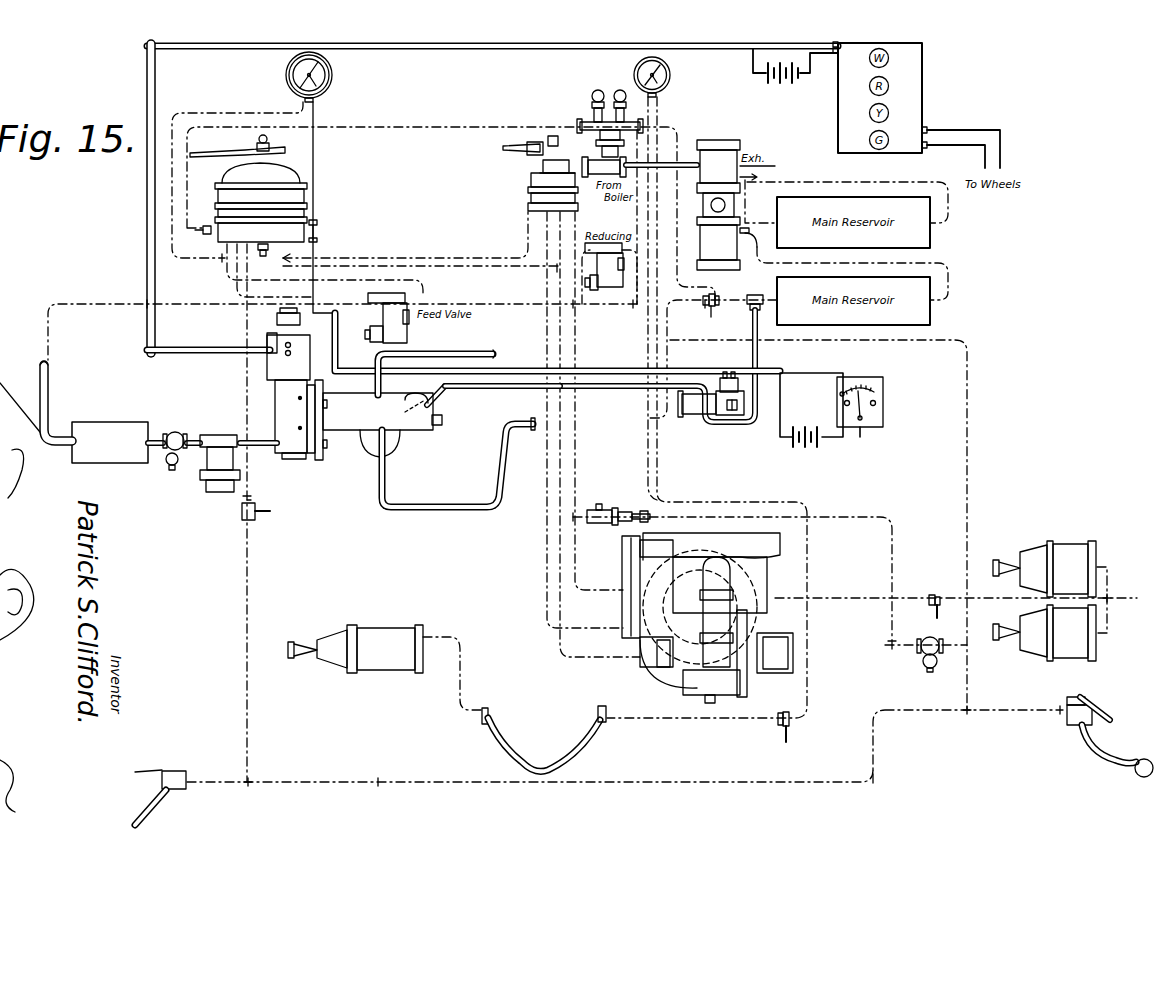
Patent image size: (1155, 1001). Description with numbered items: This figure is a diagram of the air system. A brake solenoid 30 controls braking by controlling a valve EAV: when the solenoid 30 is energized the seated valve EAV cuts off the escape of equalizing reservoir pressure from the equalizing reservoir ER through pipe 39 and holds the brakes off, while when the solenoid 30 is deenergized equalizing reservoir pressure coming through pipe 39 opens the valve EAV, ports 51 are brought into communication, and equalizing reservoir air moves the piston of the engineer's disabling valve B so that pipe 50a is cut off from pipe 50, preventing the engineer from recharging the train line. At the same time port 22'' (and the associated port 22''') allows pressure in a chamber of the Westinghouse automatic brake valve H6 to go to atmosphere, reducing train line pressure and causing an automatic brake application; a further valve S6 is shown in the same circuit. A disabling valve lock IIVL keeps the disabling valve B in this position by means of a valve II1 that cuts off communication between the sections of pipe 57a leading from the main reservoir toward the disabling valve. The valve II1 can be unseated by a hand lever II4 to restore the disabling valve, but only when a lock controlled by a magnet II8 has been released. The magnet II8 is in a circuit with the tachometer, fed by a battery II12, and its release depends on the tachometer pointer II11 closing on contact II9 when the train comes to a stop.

The Westinghouse automatic brake valve H6 is at (283, 198).
The valve S6 is at (540, 173).
The brake solenoid 30 is at (263, 369).
The valve EAV is at (283, 409).
The port 22''' is at (255, 391).
The port 22'' is at (255, 427).
The pipe 39 is at (267, 448).
The brake valve B is at (382, 418).
The port 51 is at (415, 410).
The pipe 50 is at (485, 351).
The pipe 50a is at (470, 508).
The pipe 57a is at (746, 424).
The disabling valve lock IIVL is at (557, 342).
The valve II1 is at (698, 408).
The hand lever II4 is at (745, 402).
The magnet II8 is at (740, 378).
The contact II9 is at (841, 391).
The tachometer pointer II11 is at (873, 410).
The battery II12 is at (803, 446).
The equalizing reservoir ER is at (110, 433).